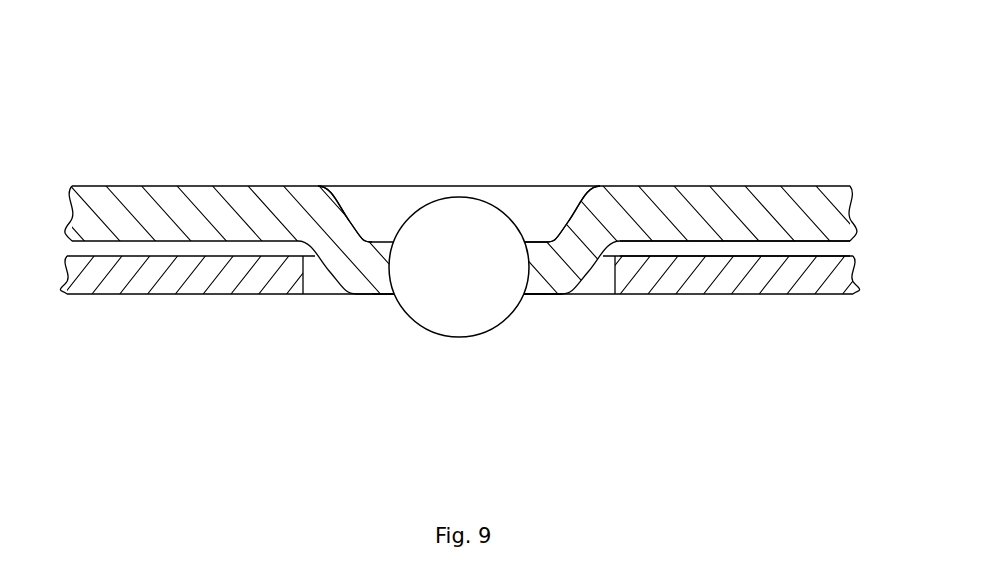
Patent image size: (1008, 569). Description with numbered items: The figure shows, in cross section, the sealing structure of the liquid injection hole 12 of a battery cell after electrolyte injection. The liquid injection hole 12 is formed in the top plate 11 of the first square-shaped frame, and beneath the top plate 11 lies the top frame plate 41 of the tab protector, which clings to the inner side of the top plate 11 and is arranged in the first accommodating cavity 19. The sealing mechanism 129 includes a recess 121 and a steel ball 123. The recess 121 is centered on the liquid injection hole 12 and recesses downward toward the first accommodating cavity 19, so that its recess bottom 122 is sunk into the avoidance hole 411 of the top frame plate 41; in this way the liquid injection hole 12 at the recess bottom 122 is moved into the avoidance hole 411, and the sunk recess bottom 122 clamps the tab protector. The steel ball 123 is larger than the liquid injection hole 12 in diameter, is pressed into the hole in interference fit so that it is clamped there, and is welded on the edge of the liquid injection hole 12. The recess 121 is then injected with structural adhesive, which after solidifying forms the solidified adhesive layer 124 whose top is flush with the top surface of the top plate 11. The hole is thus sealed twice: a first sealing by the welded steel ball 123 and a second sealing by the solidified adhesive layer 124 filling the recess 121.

The top plate 11 is at (213, 200).
The liquid injection hole 12 is at (463, 143).
The recess 121 is at (537, 208).
The recess bottom 122 is at (560, 292).
The steel ball 123 is at (457, 250).
The solidified adhesive layer 124 is at (382, 208).
The sealing mechanism 129 is at (456, 346).
The first accommodating cavity 19 is at (688, 322).
The top frame plate 41 is at (140, 280).
The avoidance hole 411 is at (315, 282).